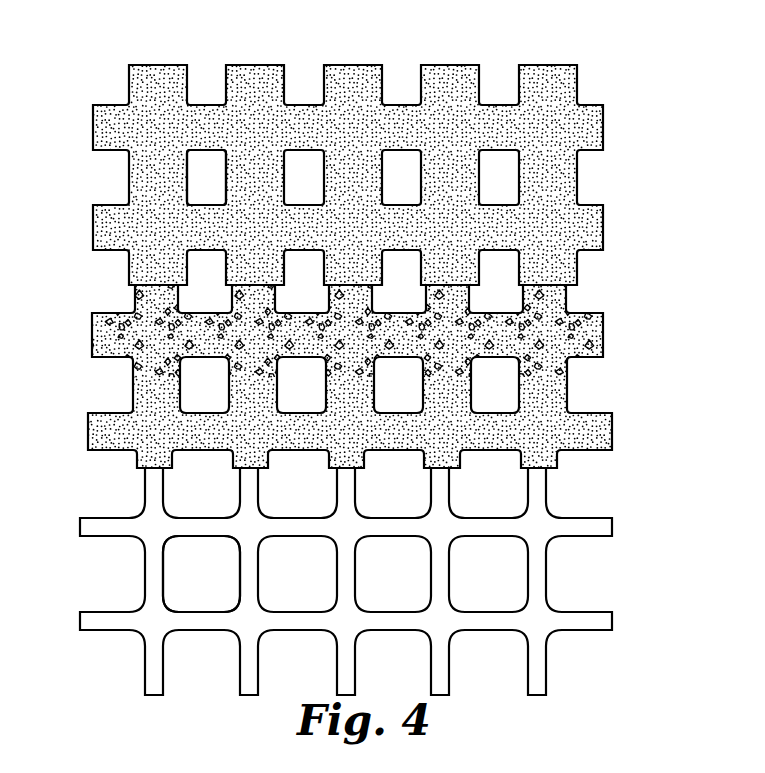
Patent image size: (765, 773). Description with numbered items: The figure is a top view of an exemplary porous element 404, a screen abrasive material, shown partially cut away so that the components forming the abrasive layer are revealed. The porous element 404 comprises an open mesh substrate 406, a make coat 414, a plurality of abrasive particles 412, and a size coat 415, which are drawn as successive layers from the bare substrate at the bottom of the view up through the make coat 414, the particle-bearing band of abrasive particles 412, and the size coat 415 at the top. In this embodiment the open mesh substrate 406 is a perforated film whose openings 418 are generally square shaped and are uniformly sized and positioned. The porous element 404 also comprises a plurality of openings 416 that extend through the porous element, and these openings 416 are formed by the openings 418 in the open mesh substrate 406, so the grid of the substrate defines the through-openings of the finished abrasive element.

The porous element 404 is at (360, 348).
The size coat 415 is at (603, 133).
The openings 416 is at (200, 183).
The abrasive particles 412 is at (592, 316).
The make coat 414 is at (612, 430).
The open mesh substrate 406 is at (612, 527).
The openings in the open mesh substrate 418 is at (223, 585).